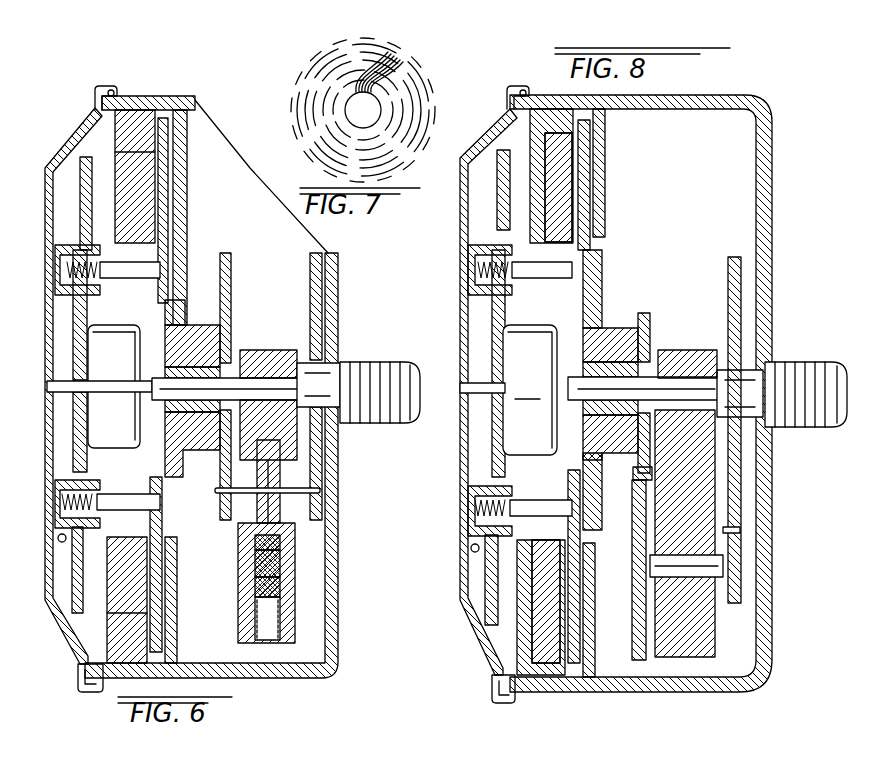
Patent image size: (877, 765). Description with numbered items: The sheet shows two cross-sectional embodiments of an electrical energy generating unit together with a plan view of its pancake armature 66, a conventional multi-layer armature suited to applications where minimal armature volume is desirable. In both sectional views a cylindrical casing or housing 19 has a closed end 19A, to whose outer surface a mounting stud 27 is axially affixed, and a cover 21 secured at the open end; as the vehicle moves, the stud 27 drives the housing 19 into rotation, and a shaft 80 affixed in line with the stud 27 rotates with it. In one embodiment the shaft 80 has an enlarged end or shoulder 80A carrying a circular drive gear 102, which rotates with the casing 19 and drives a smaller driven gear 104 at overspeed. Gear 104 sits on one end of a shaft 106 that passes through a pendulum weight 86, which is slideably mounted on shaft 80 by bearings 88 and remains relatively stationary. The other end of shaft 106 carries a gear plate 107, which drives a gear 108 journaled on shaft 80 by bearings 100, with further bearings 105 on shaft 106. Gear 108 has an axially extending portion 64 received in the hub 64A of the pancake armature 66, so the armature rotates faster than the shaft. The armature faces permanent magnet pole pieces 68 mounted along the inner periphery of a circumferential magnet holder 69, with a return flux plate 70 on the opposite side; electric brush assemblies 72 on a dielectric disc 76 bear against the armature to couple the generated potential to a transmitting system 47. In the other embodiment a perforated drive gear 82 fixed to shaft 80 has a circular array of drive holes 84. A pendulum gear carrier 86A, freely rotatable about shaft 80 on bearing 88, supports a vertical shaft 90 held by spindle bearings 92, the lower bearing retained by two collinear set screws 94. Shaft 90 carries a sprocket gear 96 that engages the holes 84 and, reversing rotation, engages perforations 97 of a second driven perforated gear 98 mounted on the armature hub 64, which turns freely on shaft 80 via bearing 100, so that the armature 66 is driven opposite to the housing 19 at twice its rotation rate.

In FIG. 6, the casing or housing 19 is at (338, 325).
In FIG. 8, the casing or housing 19 is at (725, 95).
In FIG. 8, the closed end 19A is at (772, 158).
In FIG. 6, the cover 21 is at (70, 642).
In FIG. 8, the cover 21 is at (470, 650).
In FIG. 6, the mounting stud 27 is at (390, 425).
In FIG. 8, the mounting stud 27 is at (795, 362).
In FIG. 8, the transmitting system 47 is at (527, 389).
In FIG. 6, the armature hub 64 is at (165, 315).
In FIG. 8, the armature hub 64 is at (605, 327).
In FIG. 8, the hub 64A is at (605, 262).
In FIG. 6, the pancake armature 66 is at (170, 258).
In FIG. 7, the pancake armature 66 is at (430, 100).
In FIG. 8, the pancake armature 66 is at (590, 245).
In FIG. 6, the permanent magnet pole pieces 68 is at (131, 386).
In FIG. 8, the permanent magnet pole pieces 68 is at (545, 640).
In FIG. 6, the magnet holder 69 is at (112, 110).
In FIG. 8, the magnet holder 69 is at (525, 100).
In FIG. 6, the return flux plate 70 is at (178, 196).
In FIG. 8, the return flux plate 70 is at (605, 140).
In FIG. 6, the electric brush assemblies 72 is at (160, 494).
In FIG. 8, the electric brush assemblies 72 is at (570, 500).
In FIG. 6, the dielectric disc 76 is at (76, 612).
In FIG. 8, the dielectric disc 76 is at (490, 620).
In FIG. 6, the shaft 80 is at (155, 398).
In FIG. 8, the shaft 80 is at (578, 410).
In FIG. 8, the enlarged end or shoulder 80A is at (760, 415).
In FIG. 6, the perforated drive gear 82 is at (310, 320).
In FIG. 6, the drive holes 84 is at (310, 280).
In FIG. 8, the pendulum weight 86 is at (715, 612).
In FIG. 6, the pendulum gear carrier 86A is at (238, 608).
In FIG. 6, the bearings 88 is at (268, 356).
In FIG. 8, the bearings 88 is at (680, 360).
In FIG. 6, the vertical shaft 90 is at (272, 505).
In FIG. 6, the spindle bearings 92 is at (300, 450).
In FIG. 6, the set screws 94 is at (282, 560).
In FIG. 6, the sprocket gear 96 is at (225, 516).
In FIG. 6, the perforations 97 is at (232, 278).
In FIG. 6, the second driven perforated gear 98 is at (226, 253).
In FIG. 6, the bearing 100 is at (150, 382).
In FIG. 8, the bearing 100 is at (580, 365).
In FIG. 8, the circular drive gear 102 is at (730, 280).
In FIG. 8, the driven gear 104 is at (741, 560).
In FIG. 8, the bearings 105 is at (660, 545).
In FIG. 8, the shaft 106 is at (685, 555).
In FIG. 8, the gear plate 107 is at (632, 610).
In FIG. 8, the gear 108 is at (650, 330).